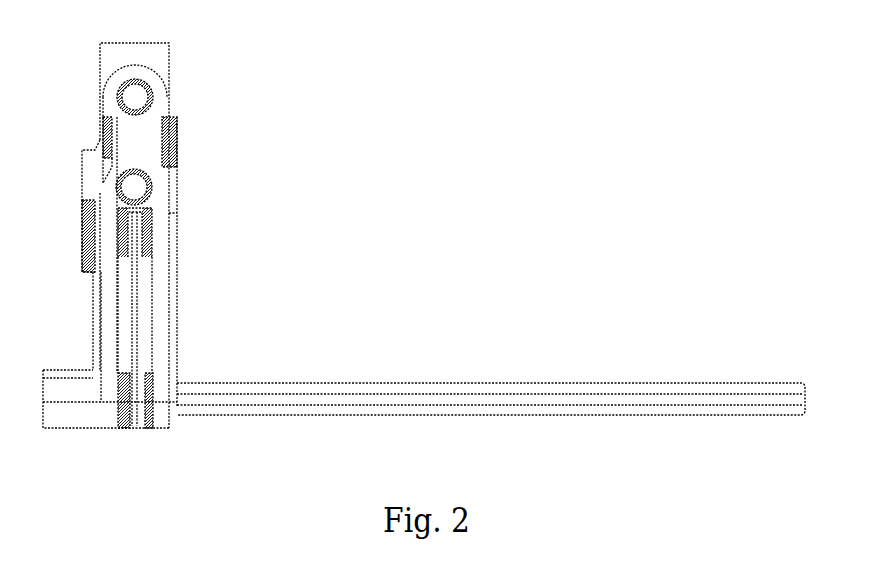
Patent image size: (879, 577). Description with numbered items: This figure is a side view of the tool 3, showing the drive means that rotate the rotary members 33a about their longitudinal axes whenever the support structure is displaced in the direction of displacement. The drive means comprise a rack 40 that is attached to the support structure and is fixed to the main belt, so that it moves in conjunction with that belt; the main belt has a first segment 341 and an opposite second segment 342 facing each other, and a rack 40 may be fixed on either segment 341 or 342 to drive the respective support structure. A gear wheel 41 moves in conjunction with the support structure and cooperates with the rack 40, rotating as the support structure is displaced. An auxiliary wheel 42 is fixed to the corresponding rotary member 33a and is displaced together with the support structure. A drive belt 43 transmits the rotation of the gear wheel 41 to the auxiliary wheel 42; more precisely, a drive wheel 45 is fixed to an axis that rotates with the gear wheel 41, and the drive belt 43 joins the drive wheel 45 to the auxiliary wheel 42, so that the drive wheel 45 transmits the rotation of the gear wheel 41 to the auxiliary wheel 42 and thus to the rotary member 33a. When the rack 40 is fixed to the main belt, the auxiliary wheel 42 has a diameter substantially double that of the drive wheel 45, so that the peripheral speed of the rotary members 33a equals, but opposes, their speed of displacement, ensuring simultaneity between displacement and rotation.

The tool 3 is at (397, 220).
The rack 40 is at (88, 173).
The gear wheel 41 is at (85, 237).
The auxiliary wheel 42 is at (142, 396).
The drive belt 43 is at (133, 329).
The drive wheel 45 is at (142, 237).
The first segment of the main belt 341 is at (163, 138).
The second segment of the main belt 342 is at (101, 128).
The rotary member 33a is at (682, 395).